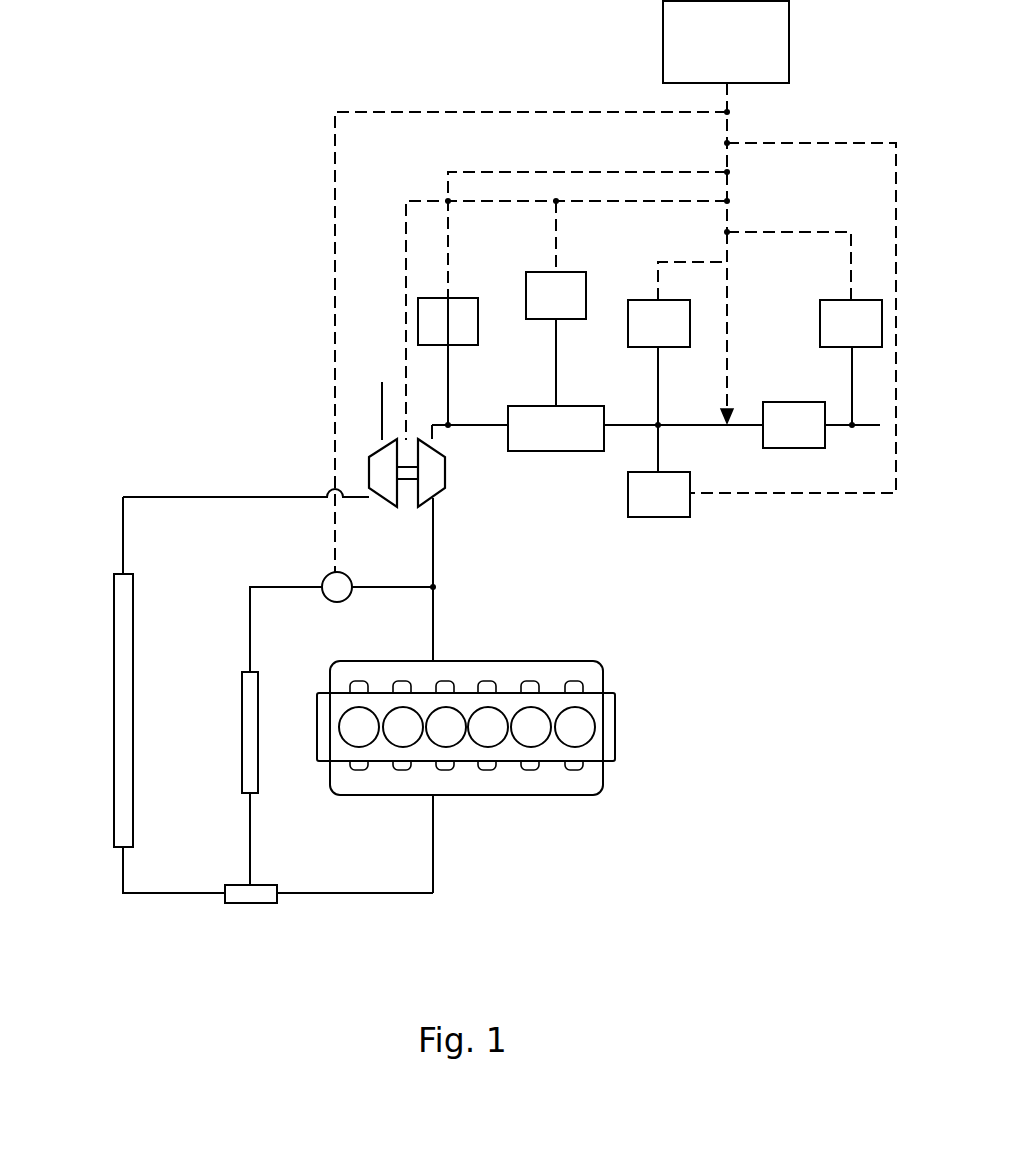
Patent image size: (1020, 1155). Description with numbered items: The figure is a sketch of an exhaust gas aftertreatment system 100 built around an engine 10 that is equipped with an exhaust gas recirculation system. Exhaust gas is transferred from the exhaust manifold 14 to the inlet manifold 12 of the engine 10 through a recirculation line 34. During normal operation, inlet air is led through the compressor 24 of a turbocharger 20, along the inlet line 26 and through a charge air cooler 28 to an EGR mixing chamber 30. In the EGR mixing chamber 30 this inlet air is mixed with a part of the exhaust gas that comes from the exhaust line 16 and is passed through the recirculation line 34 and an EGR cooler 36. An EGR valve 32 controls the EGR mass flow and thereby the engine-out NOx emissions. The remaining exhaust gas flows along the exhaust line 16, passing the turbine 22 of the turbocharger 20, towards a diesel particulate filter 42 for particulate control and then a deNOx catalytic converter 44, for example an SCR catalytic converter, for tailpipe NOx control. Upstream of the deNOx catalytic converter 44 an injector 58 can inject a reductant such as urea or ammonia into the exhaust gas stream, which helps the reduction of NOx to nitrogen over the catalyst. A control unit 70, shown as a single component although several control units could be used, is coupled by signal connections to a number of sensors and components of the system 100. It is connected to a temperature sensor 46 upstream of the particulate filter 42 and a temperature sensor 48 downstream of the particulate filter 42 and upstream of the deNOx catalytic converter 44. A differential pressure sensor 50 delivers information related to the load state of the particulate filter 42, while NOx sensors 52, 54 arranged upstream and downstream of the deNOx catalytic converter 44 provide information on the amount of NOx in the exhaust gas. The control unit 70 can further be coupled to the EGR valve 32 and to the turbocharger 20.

The engine 10 is at (519, 729).
The inlet manifold 12 is at (603, 777).
The exhaust manifold 14 is at (603, 677).
The exhaust line 16 is at (440, 625).
The turbocharger 20 is at (389, 418).
The turbine 22 is at (430, 478).
The compressor 24 is at (375, 468).
The inlet line 26 is at (153, 496).
The charge air cooler 28 is at (122, 656).
The EGR mixing chamber 30 is at (240, 905).
The EGR valve 32 is at (327, 573).
The recirculation line 34 is at (248, 630).
The EGR cooler 36 is at (252, 738).
The diesel particulate filter 42 is at (556, 428).
The deNOx catalytic converter 44 is at (794, 425).
The temperature sensor 46 is at (448, 321).
The temperature sensor 48 is at (659, 494).
The differential pressure sensor 50 is at (556, 295).
The NOx sensor 52 is at (659, 323).
The NOx sensor 54 is at (851, 323).
The injector 58 is at (732, 402).
The control unit 70 is at (726, 42).
The exhaust gas aftertreatment system 100 is at (716, 576).